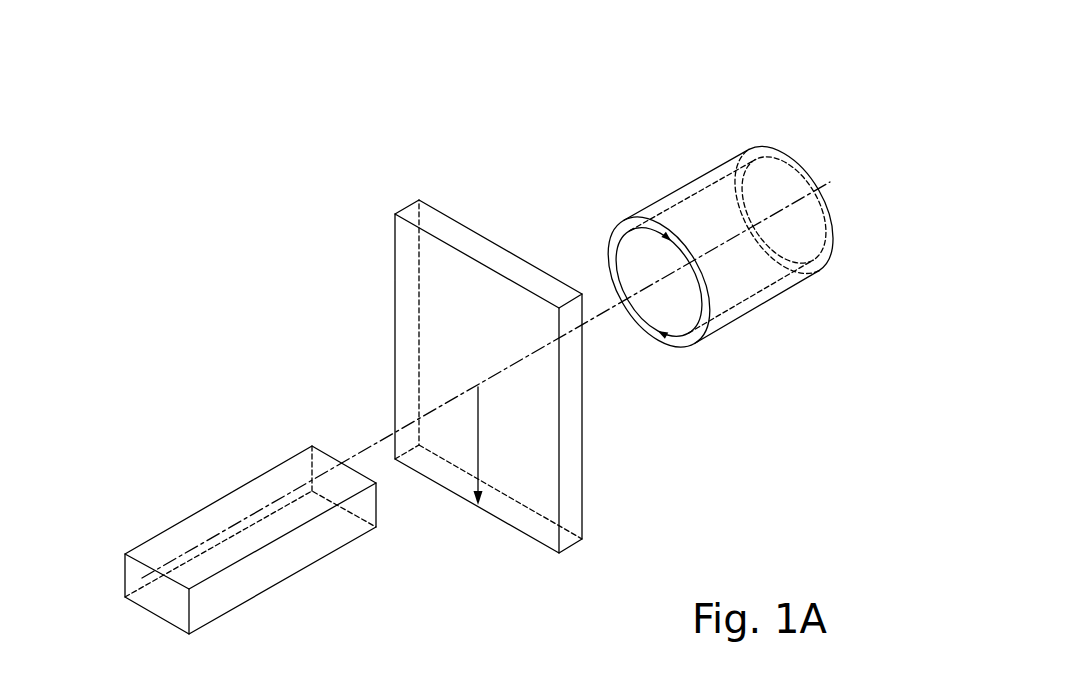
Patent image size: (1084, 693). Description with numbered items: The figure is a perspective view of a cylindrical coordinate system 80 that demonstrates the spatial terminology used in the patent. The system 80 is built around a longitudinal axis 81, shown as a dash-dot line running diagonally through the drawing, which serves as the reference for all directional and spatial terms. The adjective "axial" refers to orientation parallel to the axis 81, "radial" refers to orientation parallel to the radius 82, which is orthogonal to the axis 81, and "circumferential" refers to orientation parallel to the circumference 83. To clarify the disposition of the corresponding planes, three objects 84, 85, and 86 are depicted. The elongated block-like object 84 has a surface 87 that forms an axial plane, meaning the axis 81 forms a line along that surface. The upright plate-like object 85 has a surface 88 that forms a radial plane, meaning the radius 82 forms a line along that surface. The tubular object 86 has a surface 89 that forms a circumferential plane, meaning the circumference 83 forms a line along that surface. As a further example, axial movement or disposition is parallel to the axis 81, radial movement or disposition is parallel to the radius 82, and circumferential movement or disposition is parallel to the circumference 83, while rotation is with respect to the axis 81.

The cylindrical coordinate system 80 is at (350, 256).
The longitudinal axis 81 is at (822, 184).
The radius 82 is at (478, 440).
The circumference 83 is at (609, 244).
The object 84 is at (215, 622).
The object 85 is at (596, 548).
The object 86 is at (758, 324).
The surface 87 is at (211, 522).
The surface 88 is at (410, 334).
The surface 89 is at (687, 185).